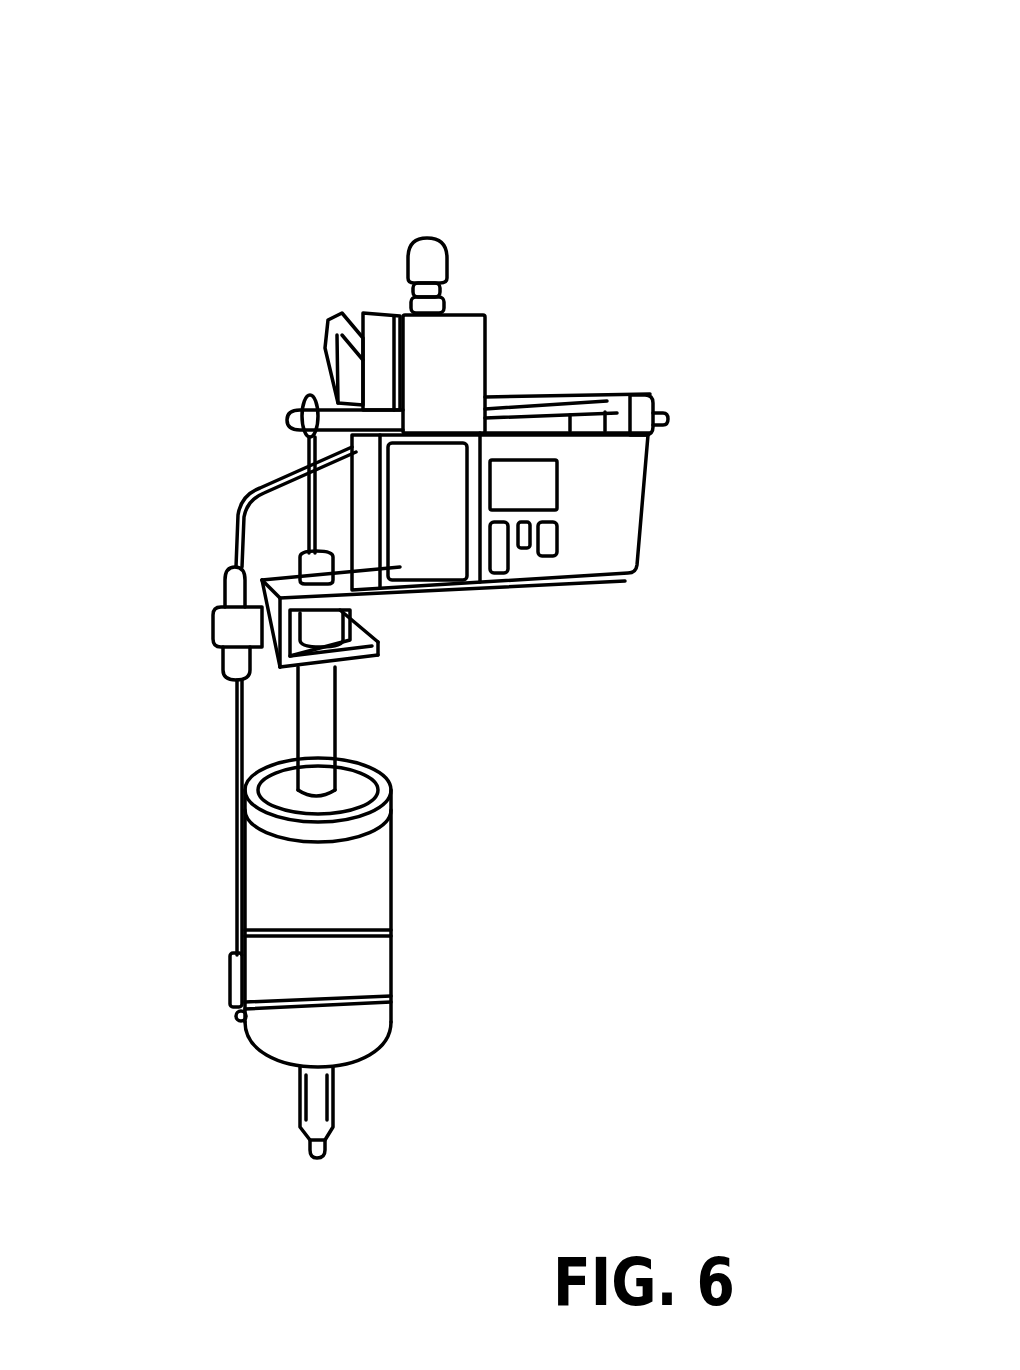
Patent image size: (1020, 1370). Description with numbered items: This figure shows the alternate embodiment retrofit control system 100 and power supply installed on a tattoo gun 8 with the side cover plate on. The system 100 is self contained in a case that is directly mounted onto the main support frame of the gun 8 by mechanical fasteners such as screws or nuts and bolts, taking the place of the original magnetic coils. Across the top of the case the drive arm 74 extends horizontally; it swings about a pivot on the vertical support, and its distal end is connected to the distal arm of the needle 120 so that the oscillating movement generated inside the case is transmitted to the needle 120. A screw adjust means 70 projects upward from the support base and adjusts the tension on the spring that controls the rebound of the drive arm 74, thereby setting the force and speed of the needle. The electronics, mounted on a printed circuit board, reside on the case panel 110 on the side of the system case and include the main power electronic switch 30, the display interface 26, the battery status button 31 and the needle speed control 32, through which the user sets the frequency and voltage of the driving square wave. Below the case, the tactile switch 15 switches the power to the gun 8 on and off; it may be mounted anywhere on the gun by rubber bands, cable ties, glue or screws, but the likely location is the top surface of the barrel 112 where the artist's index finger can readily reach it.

The retrofit control system 100 is at (287, 167).
The screw adjust means 70 is at (453, 250).
The drive arm 74 is at (547, 397).
The needle 120 is at (310, 398).
The tattoo gun 8 is at (280, 573).
The display interface 26 is at (537, 483).
The case panel 110 is at (623, 522).
The main power electronic switch 30 is at (547, 548).
The battery status button 31 is at (525, 545).
The needle speed control 32 is at (497, 557).
The tactile switch 15 is at (230, 965).
The barrel 112 is at (367, 873).